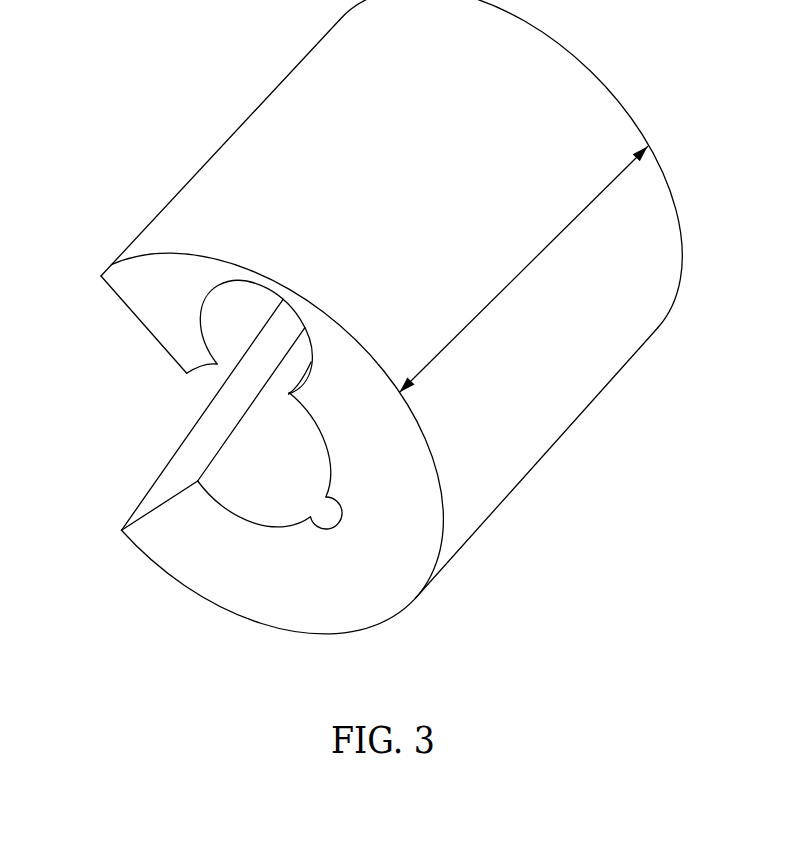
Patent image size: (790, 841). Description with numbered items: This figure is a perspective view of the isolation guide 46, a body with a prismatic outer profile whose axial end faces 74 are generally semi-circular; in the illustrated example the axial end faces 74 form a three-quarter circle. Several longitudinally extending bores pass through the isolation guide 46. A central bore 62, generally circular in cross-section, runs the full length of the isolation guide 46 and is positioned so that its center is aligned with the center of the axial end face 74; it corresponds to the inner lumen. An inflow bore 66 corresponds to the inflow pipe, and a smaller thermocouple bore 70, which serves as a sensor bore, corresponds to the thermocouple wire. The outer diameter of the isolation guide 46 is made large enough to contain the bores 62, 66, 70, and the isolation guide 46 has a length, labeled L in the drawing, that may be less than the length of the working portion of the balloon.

The isolation guide 46 is at (115, 104).
The central bore 62 is at (239, 498).
The inflow bore 66 is at (218, 299).
The thermocouple bore 70 is at (347, 530).
The axial end faces 74 is at (228, 607).